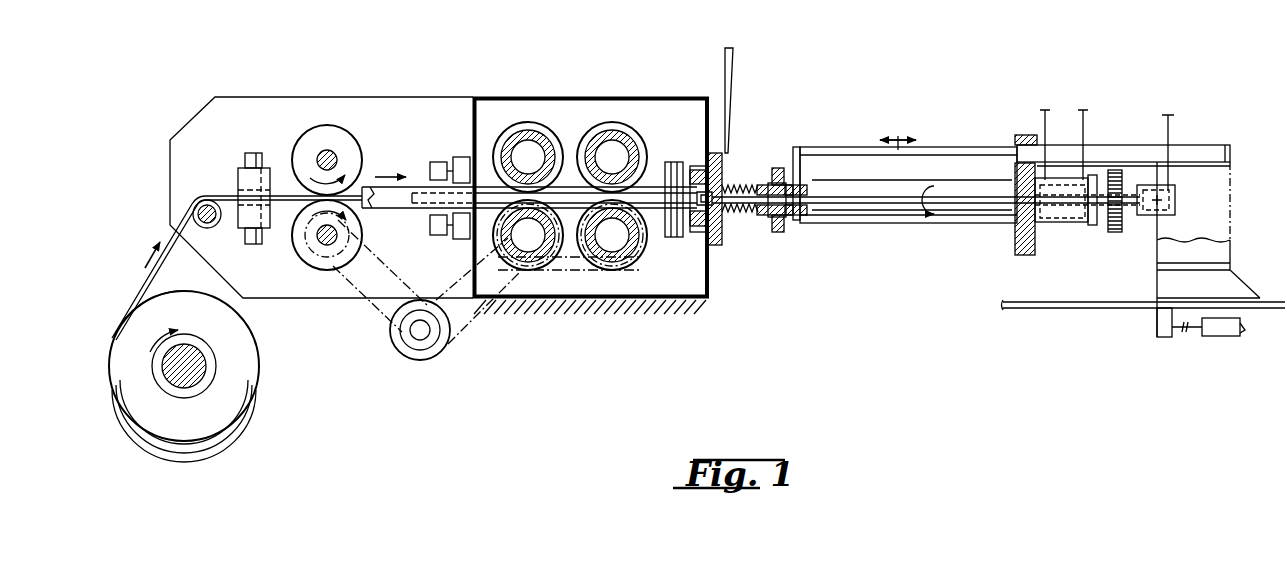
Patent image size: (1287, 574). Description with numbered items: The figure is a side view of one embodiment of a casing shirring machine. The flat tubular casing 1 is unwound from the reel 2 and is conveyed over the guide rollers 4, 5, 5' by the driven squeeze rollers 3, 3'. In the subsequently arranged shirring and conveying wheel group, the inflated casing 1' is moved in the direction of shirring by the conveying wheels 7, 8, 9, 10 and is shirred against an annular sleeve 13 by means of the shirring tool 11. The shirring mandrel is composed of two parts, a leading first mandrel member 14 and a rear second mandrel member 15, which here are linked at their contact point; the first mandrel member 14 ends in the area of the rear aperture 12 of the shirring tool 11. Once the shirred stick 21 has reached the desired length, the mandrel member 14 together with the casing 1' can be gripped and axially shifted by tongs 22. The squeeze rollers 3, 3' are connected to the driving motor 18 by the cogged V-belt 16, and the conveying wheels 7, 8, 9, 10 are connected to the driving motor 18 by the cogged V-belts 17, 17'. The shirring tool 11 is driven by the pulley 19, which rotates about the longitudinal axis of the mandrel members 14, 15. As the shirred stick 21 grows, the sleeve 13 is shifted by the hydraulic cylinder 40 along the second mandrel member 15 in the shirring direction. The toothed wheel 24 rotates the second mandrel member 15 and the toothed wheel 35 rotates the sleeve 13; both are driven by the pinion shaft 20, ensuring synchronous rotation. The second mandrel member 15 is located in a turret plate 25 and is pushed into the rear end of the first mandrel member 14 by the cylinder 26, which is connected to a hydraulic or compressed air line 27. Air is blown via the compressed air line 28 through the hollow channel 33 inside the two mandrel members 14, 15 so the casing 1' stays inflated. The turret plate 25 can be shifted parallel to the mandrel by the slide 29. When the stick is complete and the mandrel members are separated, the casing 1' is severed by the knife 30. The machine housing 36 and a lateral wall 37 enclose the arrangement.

The flat tubular casing 1 is at (237, 268).
The inflated casing 1' is at (529, 221).
The reel 2 is at (232, 382).
The squeeze roller 3 is at (327, 273).
The squeeze roller 3' is at (327, 126).
The guide roller 4 is at (218, 228).
The guide roller 5 is at (224, 198).
The guide roller 5' is at (253, 198).
The conveying wheel 7 is at (528, 135).
The conveying wheel 8 is at (540, 275).
The conveying wheel 9 is at (612, 135).
The conveying wheel 10 is at (608, 270).
The shirring tool 11 is at (725, 178).
The rear aperture 12 is at (720, 247).
The annular sleeve 13 is at (770, 233).
The first mandrel member 14 is at (485, 190).
The second mandrel member 15 is at (955, 200).
The cogged V-belt 16 is at (365, 305).
The cogged V-belt 17 is at (478, 305).
The cogged V-belt 17' is at (569, 312).
The driving motor 18 is at (428, 360).
The pulley 19 is at (677, 240).
The pinion shaft 20 is at (880, 215).
The shirred stick 21 is at (745, 185).
The tongs 22 is at (436, 238).
The toothed wheel 24 is at (1113, 235).
The turret plate 25 is at (1025, 255).
The cylinder 26 is at (1065, 225).
The hydraulic line or compressed air line 27 is at (1083, 115).
The compressed air line 28 is at (1168, 130).
The slide 29 is at (1240, 298).
The knife 30 is at (735, 60).
The hollow channel 33 is at (420, 188).
The toothed wheel 35 is at (790, 225).
The machine housing 36 is at (668, 304).
The lateral wall 37 is at (402, 105).
The hydraulic cylinder 40 is at (1118, 155).